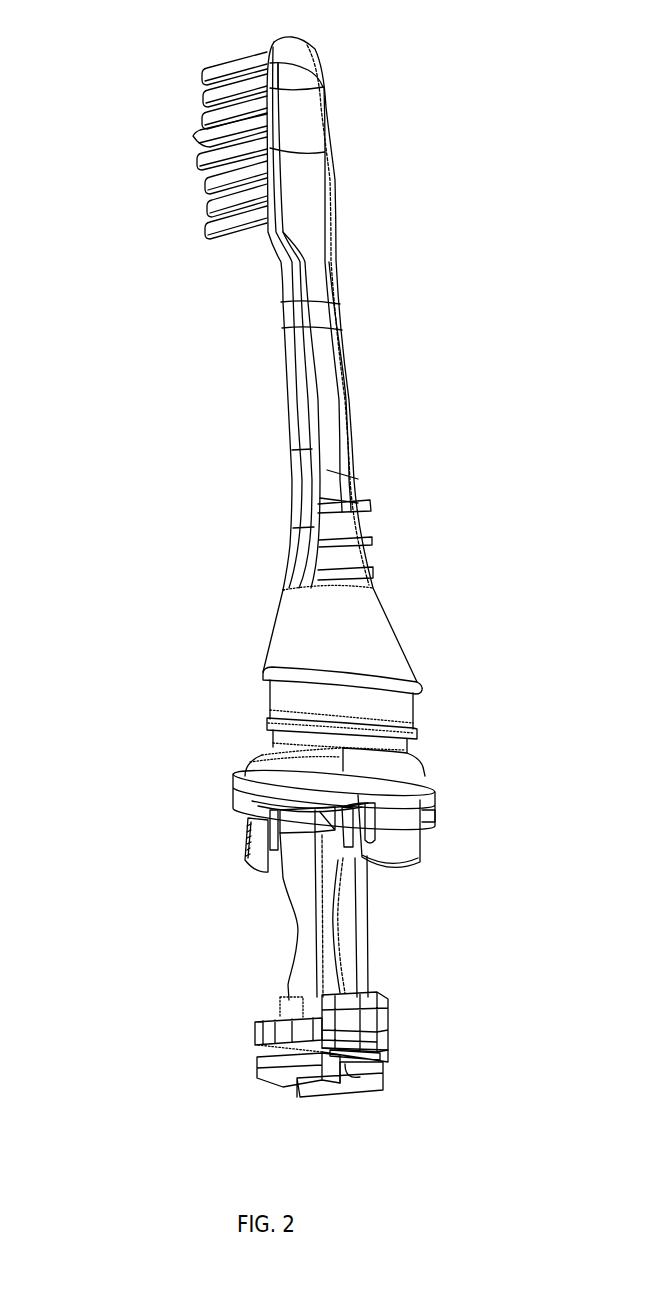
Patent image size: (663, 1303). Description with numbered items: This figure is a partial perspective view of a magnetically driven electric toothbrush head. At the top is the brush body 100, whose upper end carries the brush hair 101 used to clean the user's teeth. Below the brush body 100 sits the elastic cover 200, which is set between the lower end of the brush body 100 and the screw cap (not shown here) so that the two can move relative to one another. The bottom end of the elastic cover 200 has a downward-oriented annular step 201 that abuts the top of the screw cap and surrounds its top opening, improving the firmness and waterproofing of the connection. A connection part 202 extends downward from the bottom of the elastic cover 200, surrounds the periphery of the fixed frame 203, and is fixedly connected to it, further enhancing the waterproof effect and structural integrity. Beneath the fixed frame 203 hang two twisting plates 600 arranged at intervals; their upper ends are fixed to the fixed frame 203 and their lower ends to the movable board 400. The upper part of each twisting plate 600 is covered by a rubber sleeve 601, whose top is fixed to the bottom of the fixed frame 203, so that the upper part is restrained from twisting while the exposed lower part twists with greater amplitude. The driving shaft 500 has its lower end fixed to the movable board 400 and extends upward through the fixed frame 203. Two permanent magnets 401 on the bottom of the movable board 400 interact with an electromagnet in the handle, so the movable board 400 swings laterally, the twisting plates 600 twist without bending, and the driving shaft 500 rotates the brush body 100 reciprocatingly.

The brush body 100 is at (325, 443).
The brush hair 101 is at (232, 120).
The elastic cover 200 is at (373, 640).
The annular step 201 is at (266, 676).
The connection part 202 is at (395, 705).
The fixed frame 203 is at (257, 760).
The movable board 400 is at (288, 1027).
The permanent magnet 401 is at (288, 1067).
The driving shaft 500 is at (358, 903).
The twisting plate 600 is at (297, 922).
The rubber sleeve 601 is at (288, 822).